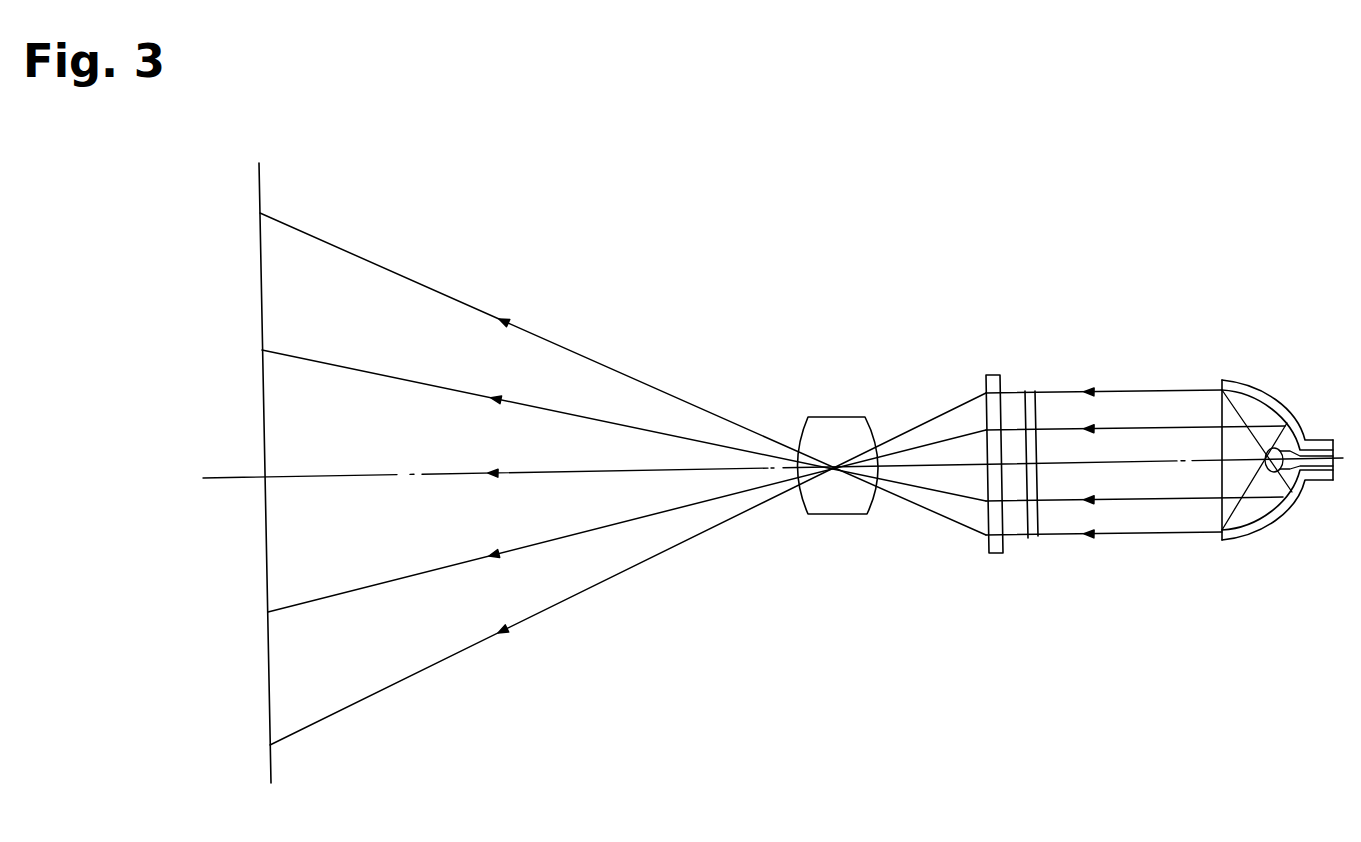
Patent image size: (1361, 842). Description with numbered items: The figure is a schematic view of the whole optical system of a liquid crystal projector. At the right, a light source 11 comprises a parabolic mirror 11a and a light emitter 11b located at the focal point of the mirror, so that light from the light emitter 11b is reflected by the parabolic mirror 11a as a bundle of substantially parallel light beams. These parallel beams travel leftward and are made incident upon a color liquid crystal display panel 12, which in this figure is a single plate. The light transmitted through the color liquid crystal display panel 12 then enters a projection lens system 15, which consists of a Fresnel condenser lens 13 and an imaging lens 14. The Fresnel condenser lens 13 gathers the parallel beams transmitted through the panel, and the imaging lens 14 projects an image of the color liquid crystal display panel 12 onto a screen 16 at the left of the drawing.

The light source 11 is at (1291, 542).
The parabolic mirror 11a is at (1268, 533).
The light emitter 11b is at (1300, 493).
The color liquid crystal display panel 12 is at (1032, 540).
The Fresnel condenser lens 13 is at (1000, 510).
The imaging lens 14 is at (840, 497).
The projection lens system 15 is at (913, 538).
The screen 16 is at (268, 697).